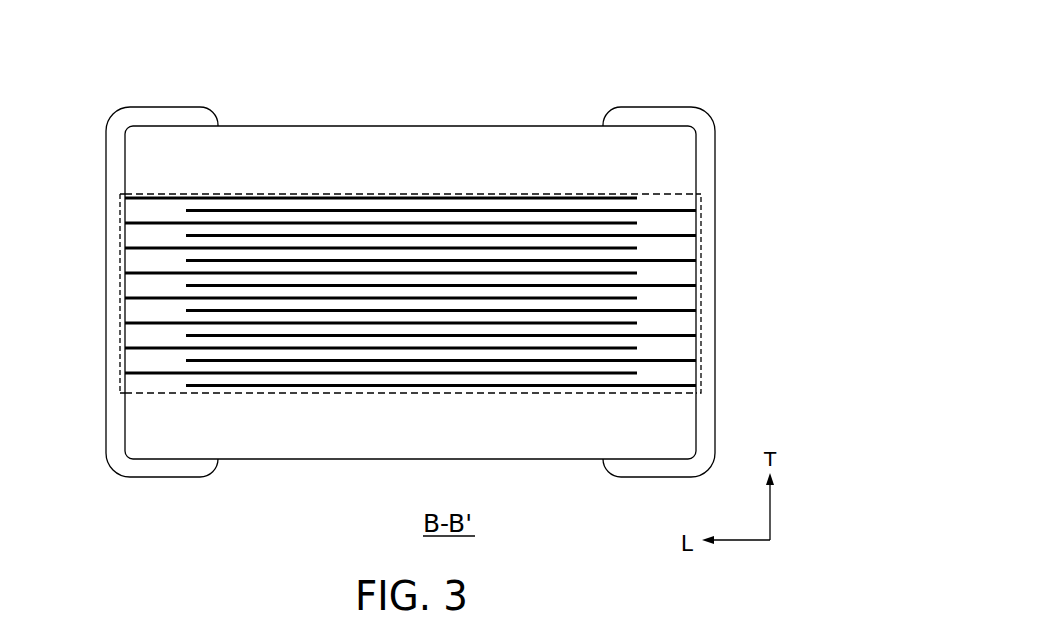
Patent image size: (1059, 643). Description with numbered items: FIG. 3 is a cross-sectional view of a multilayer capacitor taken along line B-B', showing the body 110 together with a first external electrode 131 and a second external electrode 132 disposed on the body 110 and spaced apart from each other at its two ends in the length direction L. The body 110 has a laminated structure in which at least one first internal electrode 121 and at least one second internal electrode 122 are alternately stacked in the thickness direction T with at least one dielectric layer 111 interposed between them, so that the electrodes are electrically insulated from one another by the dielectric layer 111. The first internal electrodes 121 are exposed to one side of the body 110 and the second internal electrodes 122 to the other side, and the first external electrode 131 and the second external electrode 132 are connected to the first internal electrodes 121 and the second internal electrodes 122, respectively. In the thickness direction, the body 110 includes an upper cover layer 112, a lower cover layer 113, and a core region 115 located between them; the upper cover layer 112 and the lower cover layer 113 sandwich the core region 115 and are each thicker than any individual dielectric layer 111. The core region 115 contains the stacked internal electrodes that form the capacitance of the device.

The body 110 is at (519, 118).
The dielectric layer 111 is at (433, 207).
The upper cover layer 112 is at (352, 149).
The lower cover layer 113 is at (547, 440).
The core region 115 is at (278, 182).
The first internal electrode 121 is at (128, 239).
The second internal electrode 122 is at (678, 236).
The first external electrode 131 is at (120, 182).
The second external electrode 132 is at (702, 168).